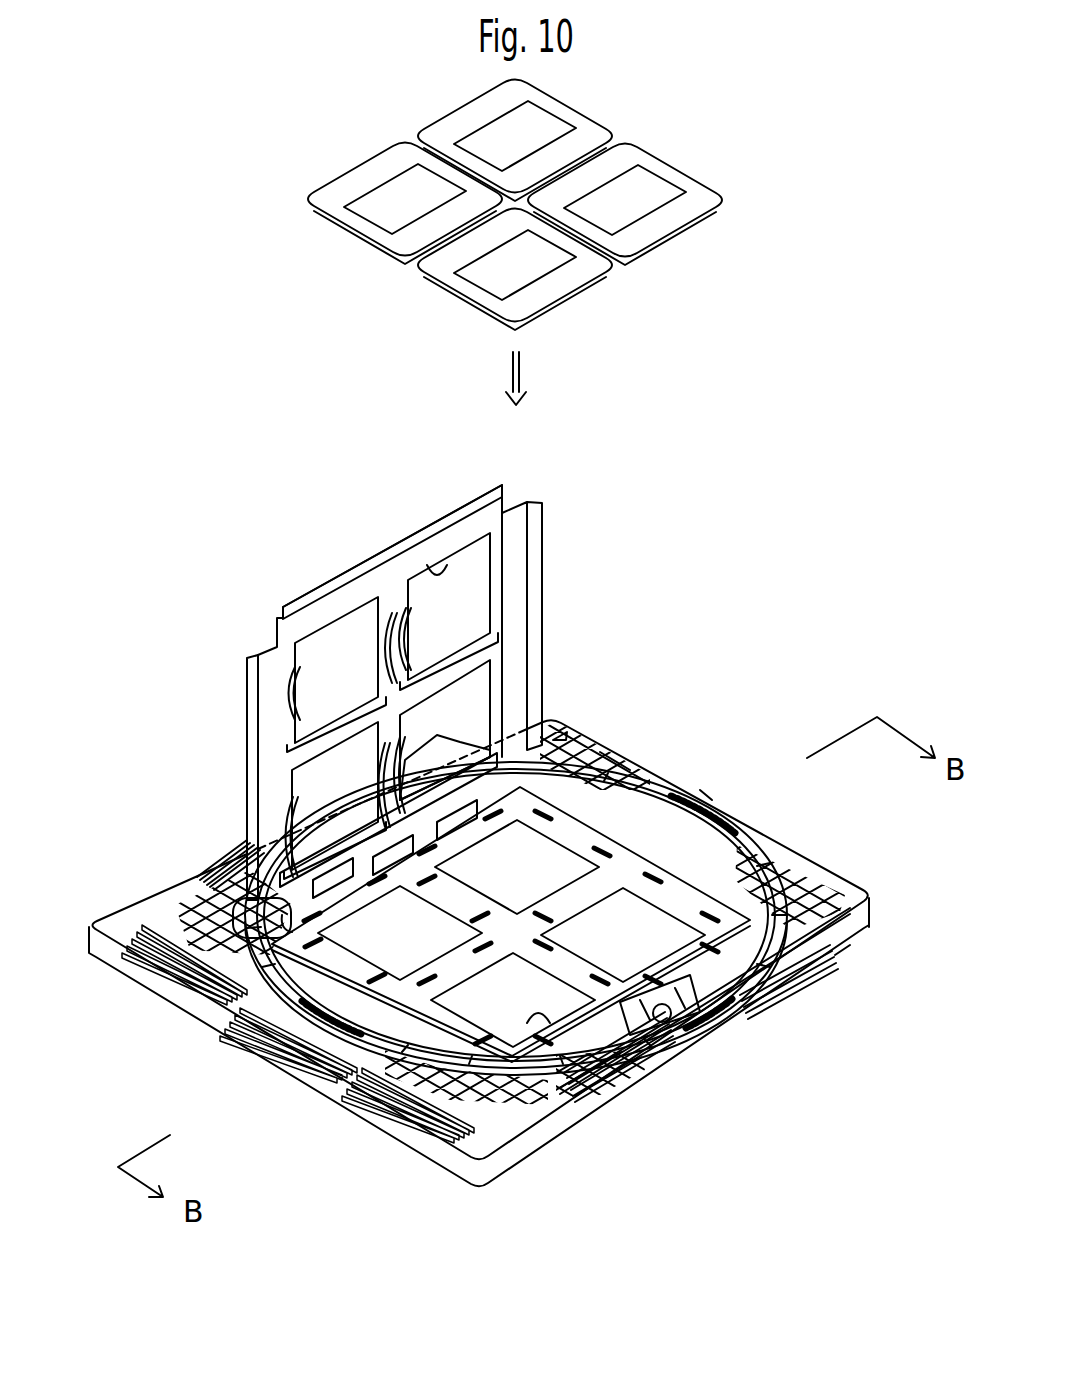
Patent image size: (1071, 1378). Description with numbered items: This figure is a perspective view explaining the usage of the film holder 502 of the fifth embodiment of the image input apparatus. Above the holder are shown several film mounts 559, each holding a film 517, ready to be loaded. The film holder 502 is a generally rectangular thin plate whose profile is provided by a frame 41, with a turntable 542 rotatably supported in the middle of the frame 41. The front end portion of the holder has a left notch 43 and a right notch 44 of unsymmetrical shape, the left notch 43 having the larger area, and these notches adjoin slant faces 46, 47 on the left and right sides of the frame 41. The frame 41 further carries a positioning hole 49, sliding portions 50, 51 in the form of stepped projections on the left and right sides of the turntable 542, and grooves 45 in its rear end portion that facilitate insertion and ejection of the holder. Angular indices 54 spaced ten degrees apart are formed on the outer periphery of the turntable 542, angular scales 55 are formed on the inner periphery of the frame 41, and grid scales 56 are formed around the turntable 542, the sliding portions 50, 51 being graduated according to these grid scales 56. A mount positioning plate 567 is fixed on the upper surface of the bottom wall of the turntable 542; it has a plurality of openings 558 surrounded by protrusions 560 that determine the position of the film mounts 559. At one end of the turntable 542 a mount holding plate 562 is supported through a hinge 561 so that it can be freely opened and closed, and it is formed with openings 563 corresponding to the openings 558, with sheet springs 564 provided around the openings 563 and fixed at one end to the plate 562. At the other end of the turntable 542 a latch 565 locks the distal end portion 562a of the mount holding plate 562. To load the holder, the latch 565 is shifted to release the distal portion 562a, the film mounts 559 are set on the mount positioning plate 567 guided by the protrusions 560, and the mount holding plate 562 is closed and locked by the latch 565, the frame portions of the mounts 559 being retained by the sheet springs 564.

The film 517 is at (635, 192).
The film mount 559 is at (517, 206).
The opening of mount holding plate 563 is at (440, 565).
The distal end portion of mount holding plate 562a is at (320, 587).
The sheet spring 564 is at (515, 575).
The mount holding plate 562 is at (396, 690).
The slant face 46 is at (446, 749).
The left notch 43 is at (566, 712).
The film holder 502 is at (714, 652).
The grid scale 56 is at (607, 758).
The angular scale 55 is at (687, 793).
The angular index 54 is at (667, 790).
The turntable 542 is at (516, 870).
The frame 41 is at (763, 827).
The hinge 561 is at (330, 862).
The sliding portion 50 is at (217, 857).
The right notch 44 is at (830, 958).
The slant face 47 is at (837, 967).
The positioning hole 49 is at (807, 973).
The sliding portion 51 is at (760, 997).
The latch 565 is at (677, 1030).
The mount positioning plate 567 is at (333, 968).
The protrusion 560 is at (454, 1015).
The groove 45 is at (443, 1120).
The opening of mount positioning plate 558 is at (525, 1025).